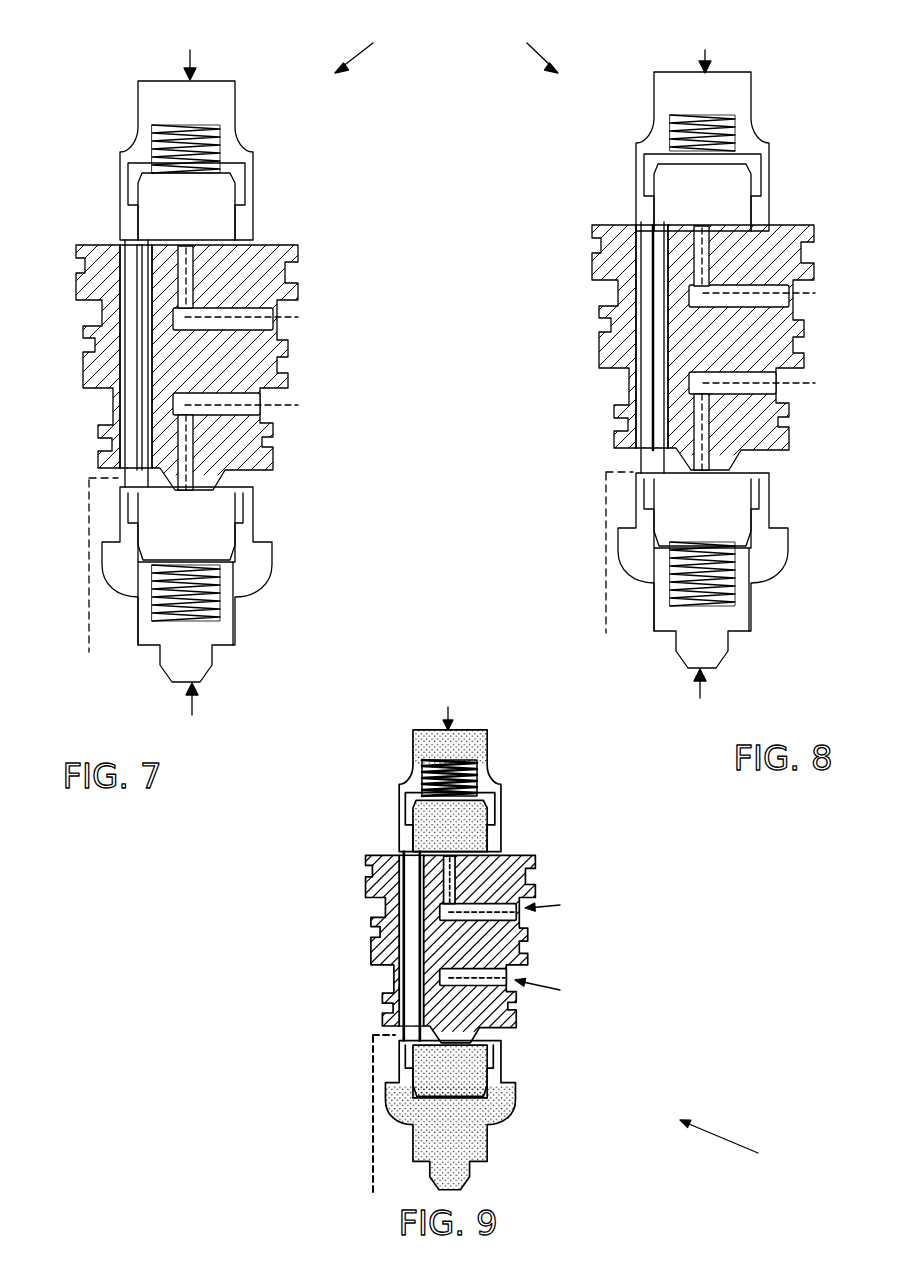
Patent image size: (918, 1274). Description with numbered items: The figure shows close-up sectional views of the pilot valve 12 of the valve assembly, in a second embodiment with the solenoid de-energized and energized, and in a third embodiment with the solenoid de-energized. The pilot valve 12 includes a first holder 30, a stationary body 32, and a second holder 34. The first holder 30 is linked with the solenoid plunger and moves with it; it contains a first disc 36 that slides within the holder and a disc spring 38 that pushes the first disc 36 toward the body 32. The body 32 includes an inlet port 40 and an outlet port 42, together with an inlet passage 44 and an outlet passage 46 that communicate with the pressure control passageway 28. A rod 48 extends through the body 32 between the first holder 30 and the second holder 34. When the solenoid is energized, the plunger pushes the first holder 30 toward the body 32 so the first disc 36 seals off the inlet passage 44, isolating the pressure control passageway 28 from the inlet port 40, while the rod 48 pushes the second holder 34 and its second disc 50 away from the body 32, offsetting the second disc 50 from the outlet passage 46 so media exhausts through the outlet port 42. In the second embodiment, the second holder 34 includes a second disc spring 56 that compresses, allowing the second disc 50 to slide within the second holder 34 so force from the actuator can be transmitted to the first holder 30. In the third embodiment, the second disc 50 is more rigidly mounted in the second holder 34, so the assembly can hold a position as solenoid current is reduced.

In FIG. 7, the pilot valve 12 is at (365, 48).
In FIG. 8, the pilot valve 12 is at (527, 48).
In FIG. 9, the pilot valve 12 is at (729, 1146).
In FIG. 7, the pressure control passageway 28 is at (93, 484).
In FIG. 8, the pressure control passageway 28 is at (610, 474).
In FIG. 9, the pressure control passageway 28 is at (372, 1143).
In FIG. 7, the first holder 30 is at (190, 53).
In FIG. 8, the first holder 30 is at (705, 49).
In FIG. 9, the first holder 30 is at (448, 705).
In FIG. 7, the stationary body 32 is at (92, 290).
In FIG. 8, the stationary body 32 is at (600, 268).
In FIG. 9, the stationary body 32 is at (372, 932).
In FIG. 7, the second holder 34 is at (192, 716).
In FIG. 8, the second holder 34 is at (700, 698).
In FIG. 9, the second holder 34 is at (455, 1135).
In FIG. 7, the first disc 36 is at (180, 215).
In FIG. 8, the first disc 36 is at (688, 191).
In FIG. 9, the first disc 36 is at (465, 820).
In FIG. 7, the disc spring 38 is at (153, 147).
In FIG. 8, the disc spring 38 is at (668, 137).
In FIG. 9, the disc spring 38 is at (423, 780).
In FIG. 7, the inlet port 40 is at (251, 318).
In FIG. 8, the inlet port 40 is at (766, 294).
In FIG. 9, the inlet port 40 is at (513, 907).
In FIG. 7, the outlet port 42 is at (251, 406).
In FIG. 8, the outlet port 42 is at (766, 383).
In FIG. 9, the outlet port 42 is at (513, 988).
In FIG. 7, the inlet passage 44 is at (185, 263).
In FIG. 8, the inlet passage 44 is at (700, 253).
In FIG. 9, the inlet passage 44 is at (460, 870).
In FIG. 7, the outlet passage 46 is at (185, 457).
In FIG. 8, the outlet passage 46 is at (703, 440).
In FIG. 7, the rod 48 is at (132, 381).
In FIG. 8, the rod 48 is at (647, 350).
In FIG. 7, the second disc 50 is at (167, 532).
In FIG. 8, the second disc 50 is at (668, 518).
In FIG. 9, the second disc 50 is at (432, 1067).
In FIG. 7, the second disc spring 56 is at (152, 592).
In FIG. 8, the second disc spring 56 is at (665, 572).